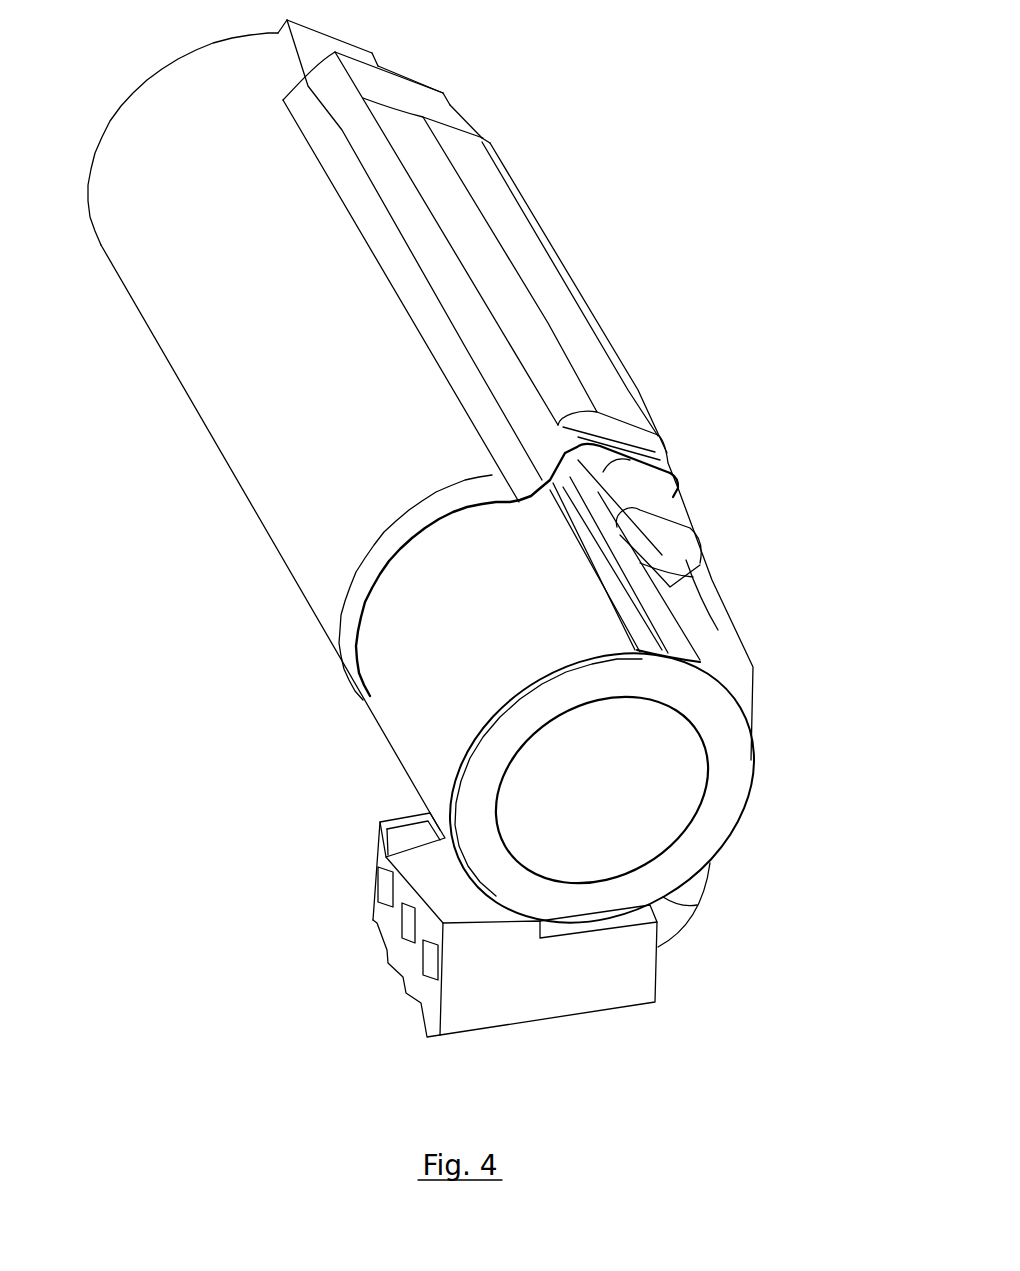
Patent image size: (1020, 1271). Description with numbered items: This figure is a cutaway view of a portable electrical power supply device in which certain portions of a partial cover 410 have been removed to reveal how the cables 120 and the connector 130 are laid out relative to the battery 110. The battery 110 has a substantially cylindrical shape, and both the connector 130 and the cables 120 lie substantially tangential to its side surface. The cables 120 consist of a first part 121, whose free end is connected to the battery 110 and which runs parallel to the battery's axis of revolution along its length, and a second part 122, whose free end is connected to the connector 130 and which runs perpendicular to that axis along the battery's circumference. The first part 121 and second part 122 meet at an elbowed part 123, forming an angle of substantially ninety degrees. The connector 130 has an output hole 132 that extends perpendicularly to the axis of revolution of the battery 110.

The partial cover 410 is at (234, 538).
The cables 120 is at (787, 632).
The first part of the cables 121 is at (612, 473).
The second part of the cables 122 is at (730, 657).
The elbowed part 123 is at (637, 530).
The battery 110 is at (623, 782).
The connector 130 is at (533, 983).
The output hole of the connector 132 is at (378, 878).